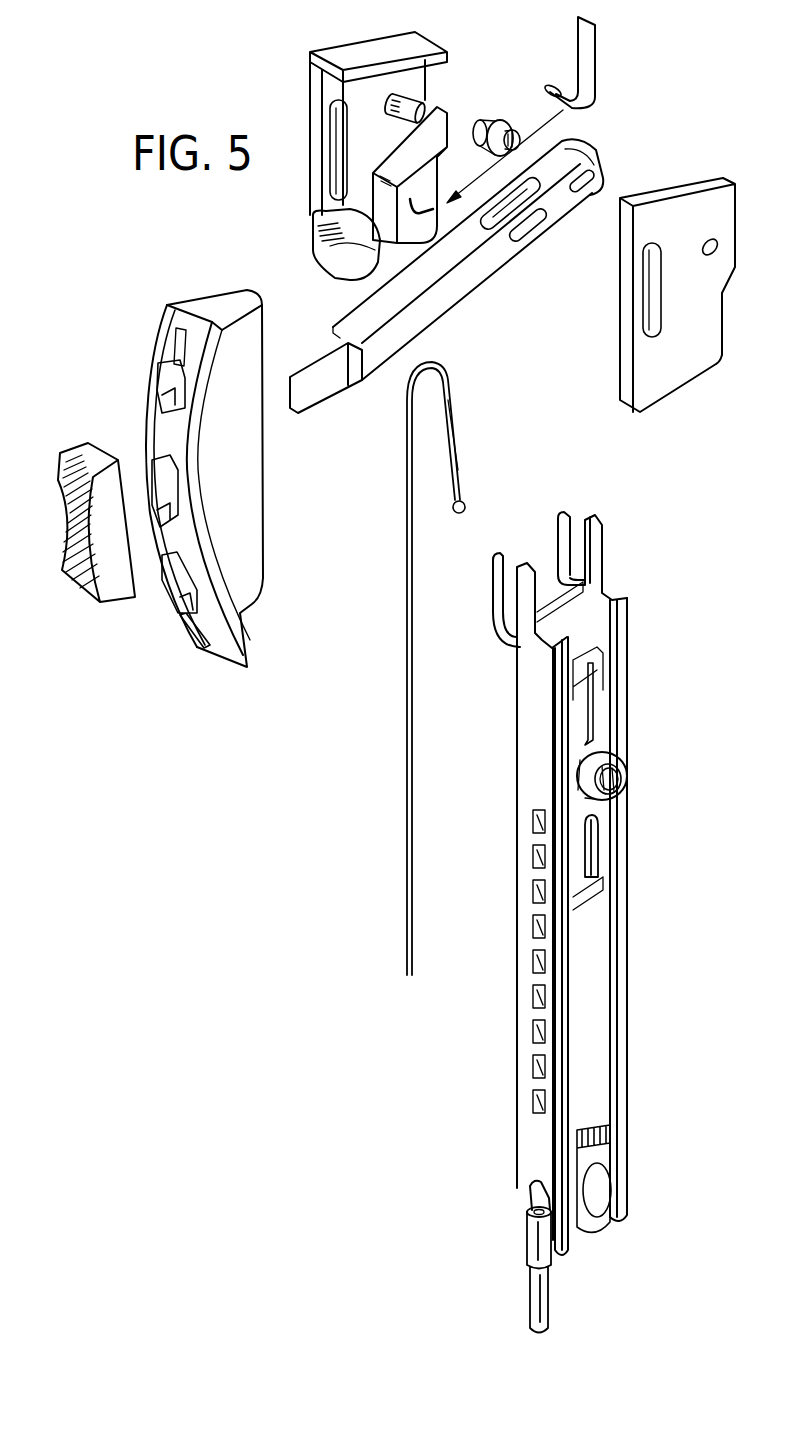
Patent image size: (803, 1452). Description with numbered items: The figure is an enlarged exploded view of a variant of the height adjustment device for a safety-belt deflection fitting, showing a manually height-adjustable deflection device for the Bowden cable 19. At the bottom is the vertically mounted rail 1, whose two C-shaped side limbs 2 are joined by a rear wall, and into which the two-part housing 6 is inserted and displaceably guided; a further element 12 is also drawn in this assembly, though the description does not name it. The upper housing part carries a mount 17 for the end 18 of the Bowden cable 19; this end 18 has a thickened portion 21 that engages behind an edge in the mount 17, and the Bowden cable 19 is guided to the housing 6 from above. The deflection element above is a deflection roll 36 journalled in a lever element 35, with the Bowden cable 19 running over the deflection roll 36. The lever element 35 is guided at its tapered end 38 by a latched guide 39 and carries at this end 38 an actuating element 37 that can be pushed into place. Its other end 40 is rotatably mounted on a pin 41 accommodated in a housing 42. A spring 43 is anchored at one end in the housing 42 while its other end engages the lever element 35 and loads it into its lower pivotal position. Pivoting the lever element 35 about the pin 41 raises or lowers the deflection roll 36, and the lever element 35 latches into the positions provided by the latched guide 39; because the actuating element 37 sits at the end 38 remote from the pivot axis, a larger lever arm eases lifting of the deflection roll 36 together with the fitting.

The rail 1 is at (618, 918).
The side limbs 2 is at (528, 748).
The housing 6 is at (590, 838).
The nut 12 is at (622, 763).
The mount 17 is at (588, 727).
The end of the Bowden cable 18 is at (458, 467).
The Bowden cable 19 is at (410, 603).
The thickened portion 21 is at (466, 510).
The lever element 35 is at (480, 263).
The deflection roll 36 is at (497, 117).
The actuating element 37 is at (72, 515).
The tapered end 38 is at (327, 380).
The latched guide 39 is at (167, 348).
The other end of the lever element 40 is at (590, 200).
The pin 41 is at (403, 100).
The housing 42 is at (355, 53).
The spring 43 is at (595, 43).